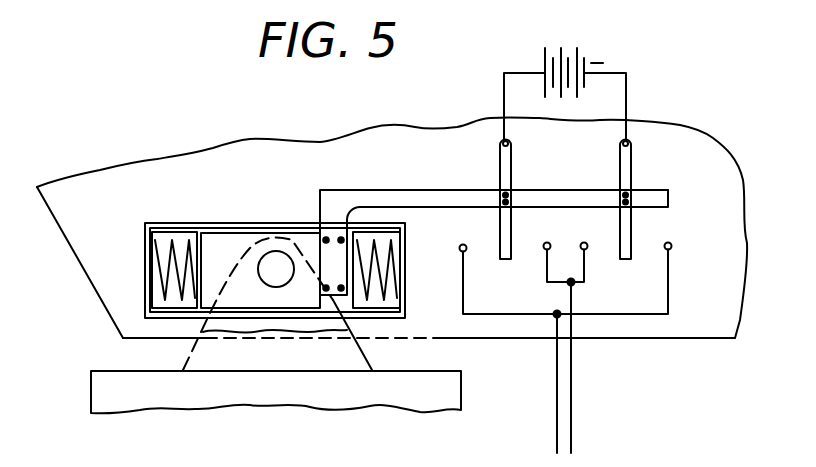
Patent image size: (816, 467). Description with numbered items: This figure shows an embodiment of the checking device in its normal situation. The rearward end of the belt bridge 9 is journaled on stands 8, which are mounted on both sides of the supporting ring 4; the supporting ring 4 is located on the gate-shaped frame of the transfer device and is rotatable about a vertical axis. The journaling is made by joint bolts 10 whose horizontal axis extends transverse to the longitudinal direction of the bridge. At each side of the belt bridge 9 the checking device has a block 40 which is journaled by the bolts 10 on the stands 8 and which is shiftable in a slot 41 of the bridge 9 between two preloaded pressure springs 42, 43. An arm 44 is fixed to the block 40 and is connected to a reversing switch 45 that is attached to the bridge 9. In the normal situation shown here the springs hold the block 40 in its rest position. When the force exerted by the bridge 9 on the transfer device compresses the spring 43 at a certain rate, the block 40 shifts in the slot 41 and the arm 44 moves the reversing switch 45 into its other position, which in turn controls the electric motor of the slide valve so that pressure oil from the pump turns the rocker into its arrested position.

The supporting ring 4 is at (105, 397).
The stands 8 is at (203, 357).
The belt bridge 9 is at (193, 168).
The joint bolts 10 is at (275, 250).
The block 40 is at (221, 248).
The slot 41 is at (163, 237).
The pressure spring 42 is at (162, 292).
The pressure spring 43 is at (376, 285).
The arm 44 is at (422, 197).
The reversing switch 45 is at (508, 172).